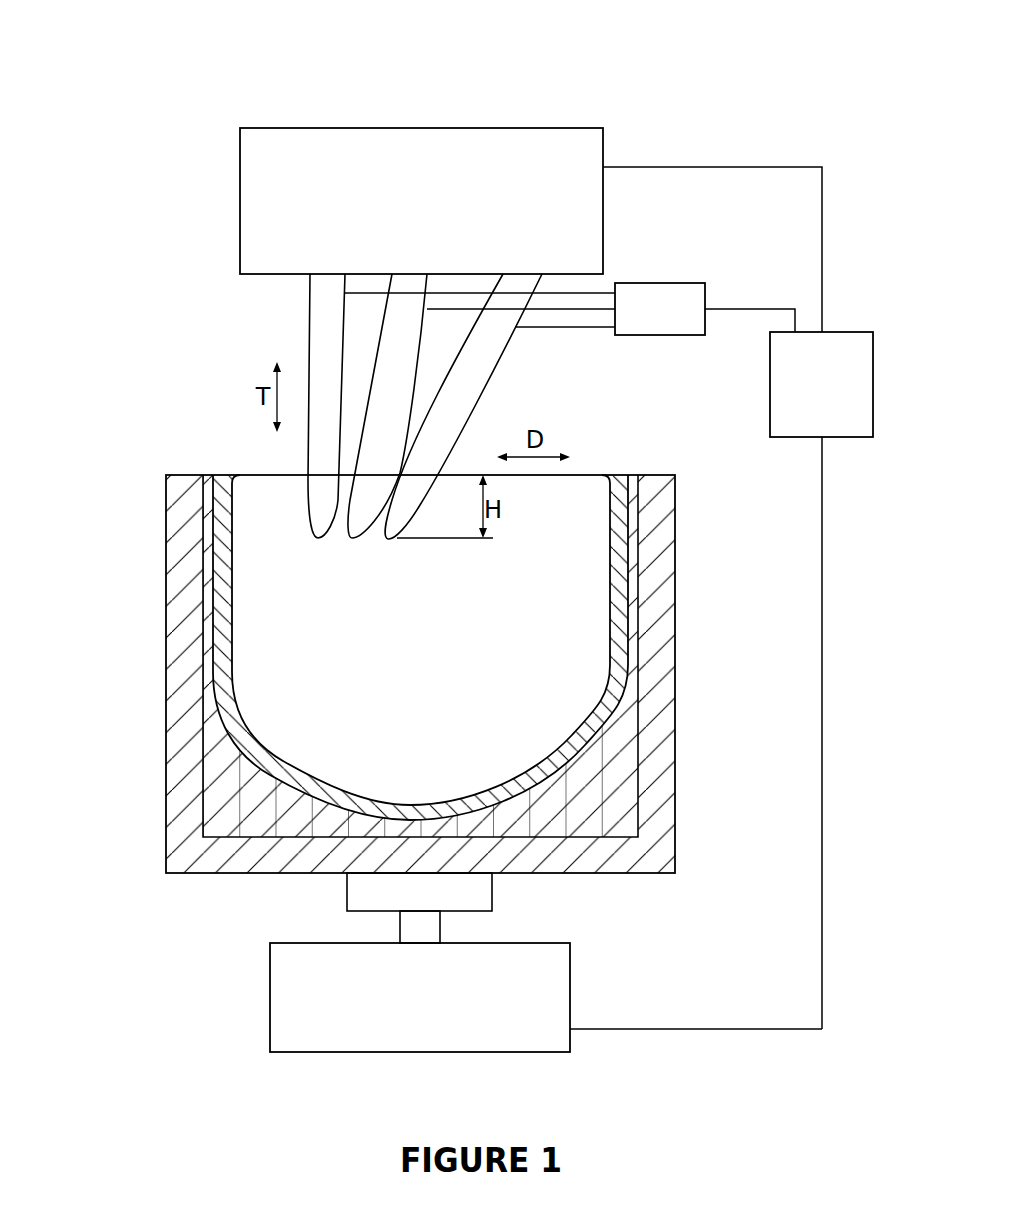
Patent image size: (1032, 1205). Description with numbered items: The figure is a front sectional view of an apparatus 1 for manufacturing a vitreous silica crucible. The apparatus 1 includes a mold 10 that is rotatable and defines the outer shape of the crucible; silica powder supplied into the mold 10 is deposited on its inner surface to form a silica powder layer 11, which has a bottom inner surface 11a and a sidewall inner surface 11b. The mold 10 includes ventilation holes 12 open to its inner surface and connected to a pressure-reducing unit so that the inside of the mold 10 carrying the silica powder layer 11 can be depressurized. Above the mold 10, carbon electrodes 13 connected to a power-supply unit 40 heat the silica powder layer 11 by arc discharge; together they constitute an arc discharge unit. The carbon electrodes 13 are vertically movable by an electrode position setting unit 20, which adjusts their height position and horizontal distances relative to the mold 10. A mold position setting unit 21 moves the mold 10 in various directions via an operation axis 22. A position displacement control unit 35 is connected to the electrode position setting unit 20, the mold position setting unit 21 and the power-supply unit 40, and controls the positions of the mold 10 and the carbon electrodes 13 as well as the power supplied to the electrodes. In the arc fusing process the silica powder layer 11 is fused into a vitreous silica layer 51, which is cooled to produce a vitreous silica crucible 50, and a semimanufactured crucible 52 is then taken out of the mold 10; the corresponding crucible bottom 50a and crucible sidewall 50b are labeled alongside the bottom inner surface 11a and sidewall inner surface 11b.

The apparatus 1 is at (648, 82).
The mold 10 is at (675, 858).
The silica powder layer 11 is at (428, 672).
The bottom inner surface 11a is at (436, 794).
The sidewall inner surface 11b is at (699, 570).
The ventilation holes 12 is at (203, 805).
The carbon electrodes 13 is at (316, 328).
The electrode position setting unit 20 is at (603, 193).
The mold position setting unit 21 is at (270, 993).
The operation axis 22 is at (400, 928).
The position displacement control unit 35 is at (788, 437).
The power-supply unit 40 is at (682, 283).
The vitreous silica crucible 50 is at (428, 672).
The vitreous silica layer 51 is at (428, 672).
The semimanufactured crucible 52 is at (428, 672).
The crucible bottom 50a is at (415, 797).
The crucible side wall 50b is at (652, 558).